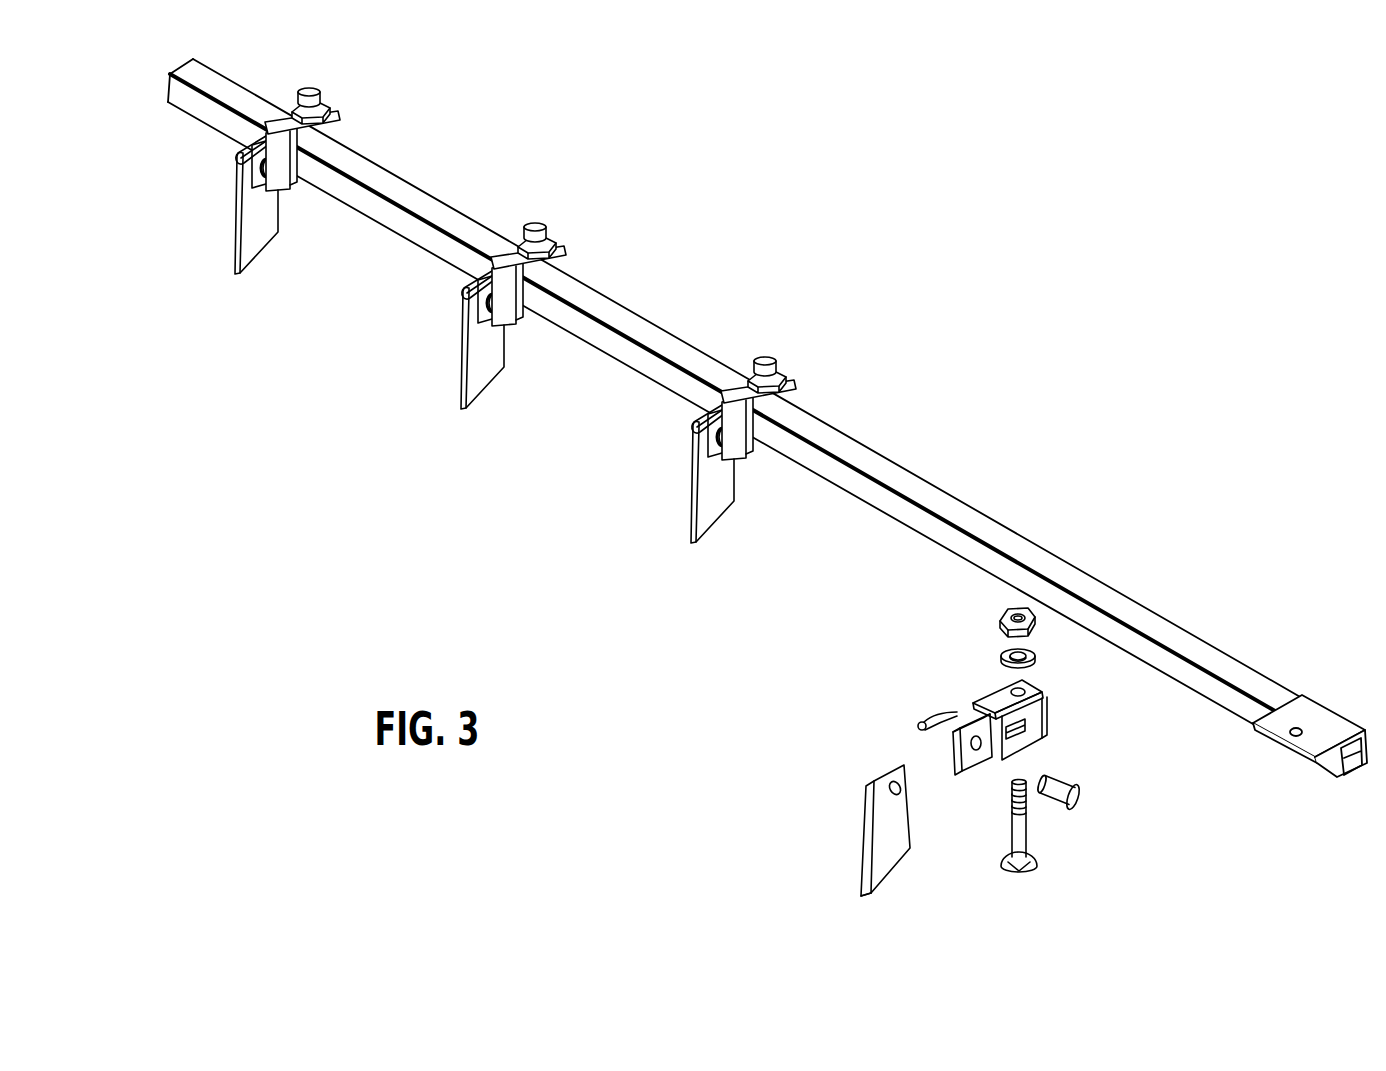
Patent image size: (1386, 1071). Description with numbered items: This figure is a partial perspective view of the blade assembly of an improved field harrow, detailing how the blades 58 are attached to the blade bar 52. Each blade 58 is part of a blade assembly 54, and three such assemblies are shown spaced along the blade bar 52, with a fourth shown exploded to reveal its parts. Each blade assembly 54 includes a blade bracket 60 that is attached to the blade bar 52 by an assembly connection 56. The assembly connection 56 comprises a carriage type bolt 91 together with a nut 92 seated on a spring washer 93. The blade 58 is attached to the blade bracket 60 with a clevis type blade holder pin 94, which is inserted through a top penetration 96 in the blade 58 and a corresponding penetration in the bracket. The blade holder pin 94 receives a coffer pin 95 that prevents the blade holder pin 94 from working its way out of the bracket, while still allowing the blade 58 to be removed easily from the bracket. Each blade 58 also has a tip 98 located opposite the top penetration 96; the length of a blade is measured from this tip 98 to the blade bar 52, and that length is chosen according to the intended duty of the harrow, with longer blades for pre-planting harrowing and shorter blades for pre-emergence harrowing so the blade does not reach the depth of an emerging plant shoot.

The blade bar 52 is at (873, 470).
The blade assembly 54 is at (352, 123).
The assembly connection 56 is at (1047, 692).
The blade 58 is at (262, 218).
The blade bracket 60 is at (1000, 688).
The carriage type bolt 91 is at (1017, 828).
The nut 92 is at (1007, 608).
The spring washer 93 is at (1002, 653).
The clevis type blade holder pin 94 is at (1052, 803).
The coffer pin 95 is at (915, 712).
The top penetration 96 is at (888, 772).
The tip 98 is at (873, 896).